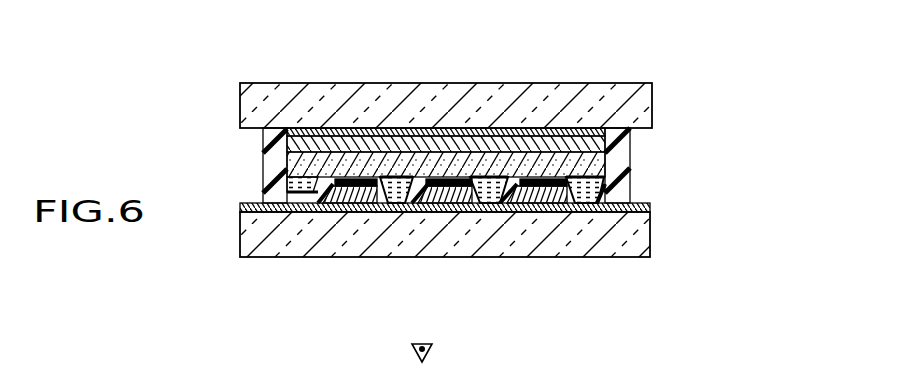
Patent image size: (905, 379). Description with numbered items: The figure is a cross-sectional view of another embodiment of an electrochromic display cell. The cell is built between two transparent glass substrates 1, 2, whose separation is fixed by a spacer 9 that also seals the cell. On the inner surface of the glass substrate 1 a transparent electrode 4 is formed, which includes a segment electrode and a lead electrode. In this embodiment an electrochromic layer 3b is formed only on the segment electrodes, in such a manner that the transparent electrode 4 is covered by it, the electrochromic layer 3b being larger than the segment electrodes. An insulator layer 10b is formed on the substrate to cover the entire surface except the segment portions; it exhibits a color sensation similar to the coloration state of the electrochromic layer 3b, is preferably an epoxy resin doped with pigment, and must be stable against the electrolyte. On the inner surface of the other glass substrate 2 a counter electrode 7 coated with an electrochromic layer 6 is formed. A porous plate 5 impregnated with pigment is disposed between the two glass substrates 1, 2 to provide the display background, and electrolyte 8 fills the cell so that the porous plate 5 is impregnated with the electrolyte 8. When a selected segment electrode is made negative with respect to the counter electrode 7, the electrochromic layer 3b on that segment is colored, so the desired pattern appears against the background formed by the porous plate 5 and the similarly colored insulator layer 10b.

The transparent glass substrate 1 is at (650, 243).
The transparent glass substrate 2 is at (652, 112).
The electrochromic layer 3b is at (386, 177).
The transparent electrode 4 is at (650, 207).
The porous plate 5 is at (605, 172).
The electrochromic layer 6 is at (583, 133).
The counter electrode 7 is at (503, 144).
The electrolyte 8 is at (350, 186).
The spacer 9 is at (263, 160).
The insulator layer 10b is at (303, 203).